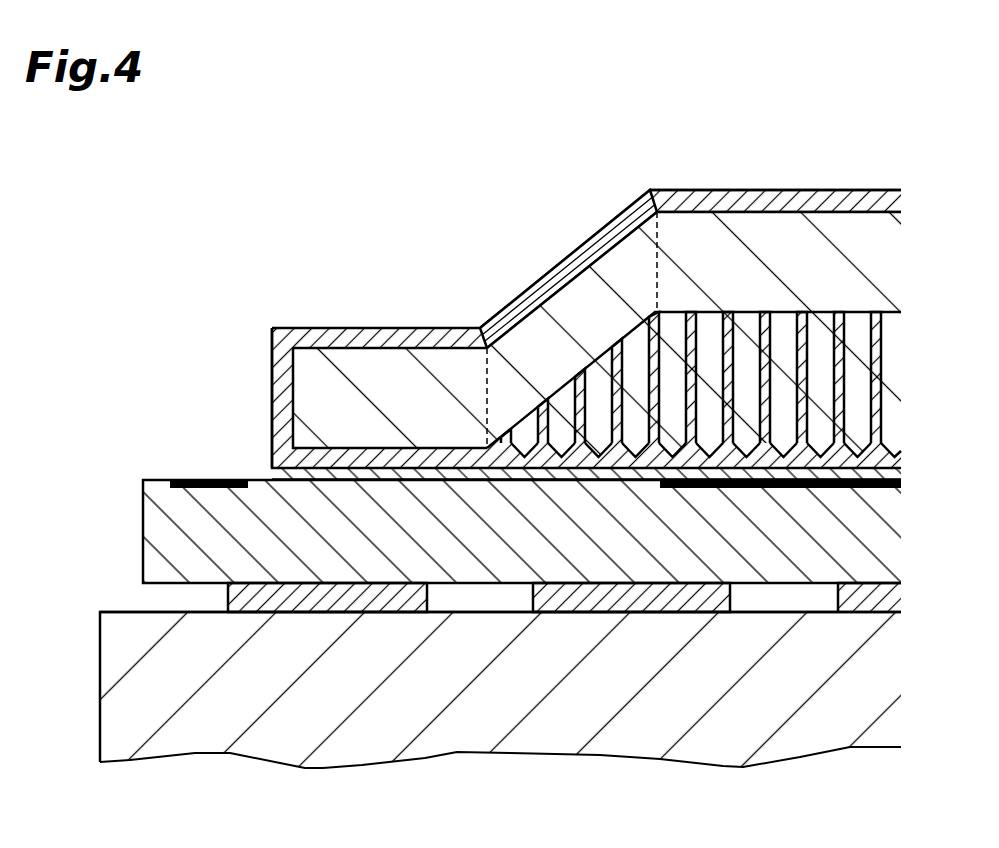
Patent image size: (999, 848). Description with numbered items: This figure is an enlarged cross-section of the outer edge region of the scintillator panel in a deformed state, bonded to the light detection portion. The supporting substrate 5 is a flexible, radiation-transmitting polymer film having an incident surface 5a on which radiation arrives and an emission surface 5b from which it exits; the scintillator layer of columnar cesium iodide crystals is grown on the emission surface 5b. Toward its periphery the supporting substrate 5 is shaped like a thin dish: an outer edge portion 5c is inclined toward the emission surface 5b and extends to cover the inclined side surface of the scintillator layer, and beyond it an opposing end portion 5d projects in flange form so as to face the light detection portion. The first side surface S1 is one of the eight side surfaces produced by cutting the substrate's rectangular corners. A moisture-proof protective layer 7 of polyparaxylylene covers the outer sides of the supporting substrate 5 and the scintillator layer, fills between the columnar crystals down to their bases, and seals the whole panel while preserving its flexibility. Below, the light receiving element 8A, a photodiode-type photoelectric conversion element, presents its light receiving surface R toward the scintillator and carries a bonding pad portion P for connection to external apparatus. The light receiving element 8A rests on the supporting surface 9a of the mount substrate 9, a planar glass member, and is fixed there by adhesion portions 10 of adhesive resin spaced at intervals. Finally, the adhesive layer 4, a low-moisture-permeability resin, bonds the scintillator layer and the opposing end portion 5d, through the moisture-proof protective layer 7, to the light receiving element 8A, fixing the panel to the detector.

The adhesive layer 4 is at (273, 477).
The supporting substrate 5 is at (842, 248).
The incident surface 5a is at (720, 210).
The emission surface 5b is at (812, 318).
The outer edge portion 5c is at (590, 293).
The opposing end portion 5d is at (375, 383).
The moisture-proof protective layer 7 is at (320, 335).
The light receiving element 8A is at (163, 530).
The mount substrate 9 is at (467, 710).
The supporting surface 9a is at (272, 613).
The adhesion portion 10 is at (360, 595).
The bonding pad portion P is at (205, 480).
The light receiving surface R is at (895, 483).
The first side surface S1 is at (292, 380).